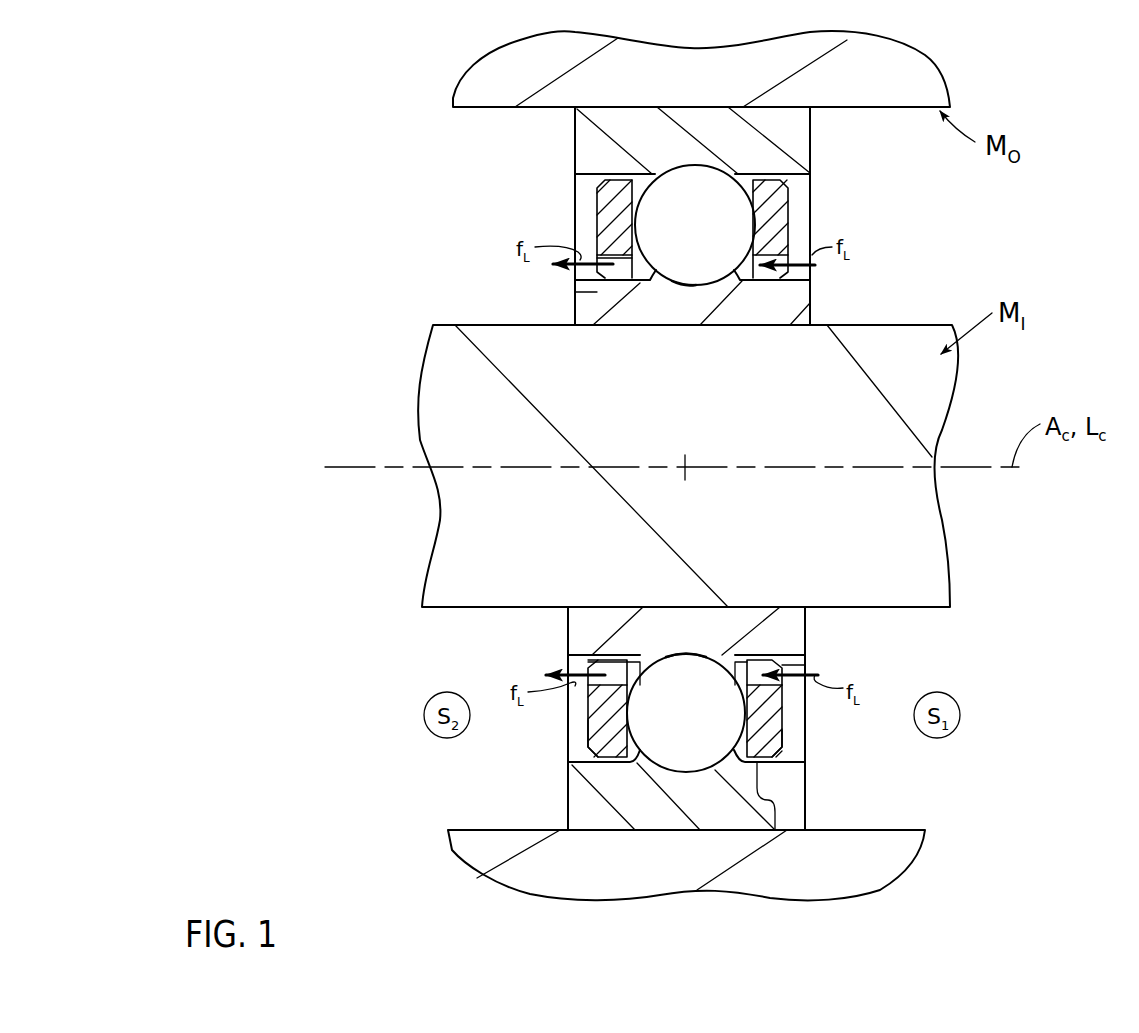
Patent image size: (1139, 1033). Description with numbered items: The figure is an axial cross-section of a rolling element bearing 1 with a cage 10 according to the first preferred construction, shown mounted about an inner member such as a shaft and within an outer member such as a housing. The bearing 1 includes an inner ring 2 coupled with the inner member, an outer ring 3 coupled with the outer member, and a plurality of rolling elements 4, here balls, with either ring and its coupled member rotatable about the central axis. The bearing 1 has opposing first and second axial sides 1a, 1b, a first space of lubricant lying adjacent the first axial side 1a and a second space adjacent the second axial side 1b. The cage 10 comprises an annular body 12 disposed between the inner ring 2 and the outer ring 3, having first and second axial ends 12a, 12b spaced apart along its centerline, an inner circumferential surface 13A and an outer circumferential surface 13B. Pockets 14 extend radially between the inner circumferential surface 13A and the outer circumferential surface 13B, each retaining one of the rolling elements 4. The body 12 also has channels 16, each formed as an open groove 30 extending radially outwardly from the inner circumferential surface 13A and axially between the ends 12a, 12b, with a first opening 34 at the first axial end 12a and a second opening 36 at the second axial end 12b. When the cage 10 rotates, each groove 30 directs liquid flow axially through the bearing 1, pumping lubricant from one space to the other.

The rolling element bearing 1 is at (471, 164).
The first axial side 1a is at (807, 798).
The second axial side 1b is at (566, 781).
The inner ring 2 is at (805, 300).
The outer ring 3 is at (805, 146).
The rolling elements 4 is at (684, 286).
The cage 10 is at (805, 222).
The annular body 12 is at (684, 712).
The first axial end 12a is at (783, 739).
The second axial end 12b is at (586, 731).
The inner circumferential surface 13A is at (748, 628).
The outer circumferential surface 13B is at (775, 830).
The pockets 14 is at (630, 230).
The channel 16 is at (596, 292).
The open groove 30 is at (628, 282).
The first opening 34 is at (782, 658).
The second opening 36 is at (590, 666).